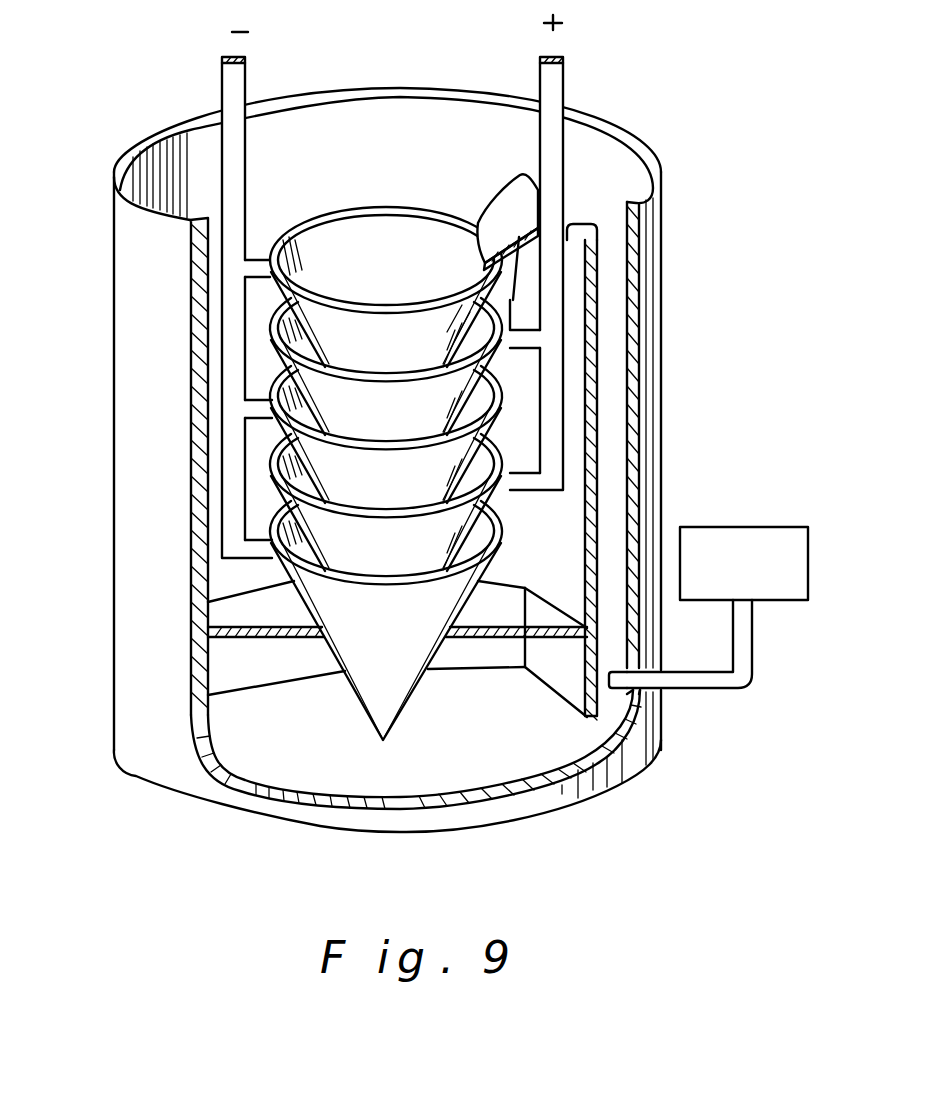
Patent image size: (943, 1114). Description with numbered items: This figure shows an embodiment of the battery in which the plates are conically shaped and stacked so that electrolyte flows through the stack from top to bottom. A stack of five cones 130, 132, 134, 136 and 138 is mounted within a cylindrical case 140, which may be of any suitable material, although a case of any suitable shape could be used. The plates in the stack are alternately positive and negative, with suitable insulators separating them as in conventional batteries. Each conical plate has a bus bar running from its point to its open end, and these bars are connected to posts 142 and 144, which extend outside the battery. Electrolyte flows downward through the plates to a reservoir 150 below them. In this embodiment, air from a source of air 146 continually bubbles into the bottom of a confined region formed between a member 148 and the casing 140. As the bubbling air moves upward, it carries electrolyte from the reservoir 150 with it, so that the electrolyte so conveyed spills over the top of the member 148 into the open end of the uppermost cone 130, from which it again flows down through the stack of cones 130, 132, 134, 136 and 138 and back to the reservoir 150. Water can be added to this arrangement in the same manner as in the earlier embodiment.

The cone 130 is at (397, 227).
The cone 132 is at (395, 383).
The cone 134 is at (392, 463).
The cone 136 is at (387, 540).
The cone 138 is at (393, 617).
The cylindrical case 140 is at (143, 628).
The post 142 is at (243, 70).
The post 144 is at (550, 78).
The source of air 146 is at (825, 508).
The member 148 is at (567, 667).
The reservoir 150 is at (334, 748).